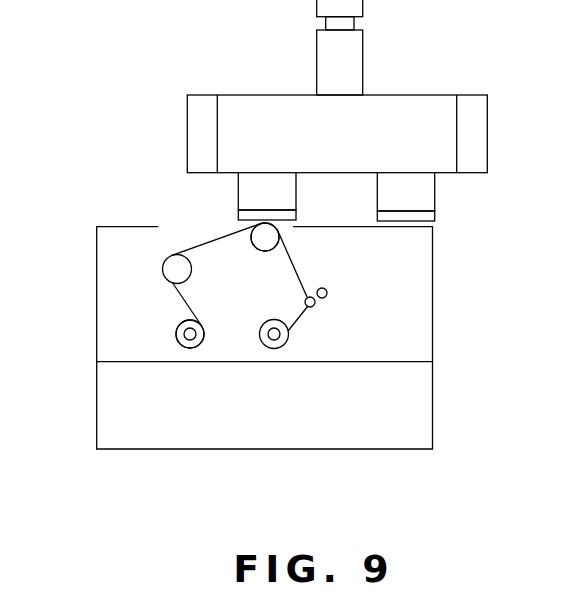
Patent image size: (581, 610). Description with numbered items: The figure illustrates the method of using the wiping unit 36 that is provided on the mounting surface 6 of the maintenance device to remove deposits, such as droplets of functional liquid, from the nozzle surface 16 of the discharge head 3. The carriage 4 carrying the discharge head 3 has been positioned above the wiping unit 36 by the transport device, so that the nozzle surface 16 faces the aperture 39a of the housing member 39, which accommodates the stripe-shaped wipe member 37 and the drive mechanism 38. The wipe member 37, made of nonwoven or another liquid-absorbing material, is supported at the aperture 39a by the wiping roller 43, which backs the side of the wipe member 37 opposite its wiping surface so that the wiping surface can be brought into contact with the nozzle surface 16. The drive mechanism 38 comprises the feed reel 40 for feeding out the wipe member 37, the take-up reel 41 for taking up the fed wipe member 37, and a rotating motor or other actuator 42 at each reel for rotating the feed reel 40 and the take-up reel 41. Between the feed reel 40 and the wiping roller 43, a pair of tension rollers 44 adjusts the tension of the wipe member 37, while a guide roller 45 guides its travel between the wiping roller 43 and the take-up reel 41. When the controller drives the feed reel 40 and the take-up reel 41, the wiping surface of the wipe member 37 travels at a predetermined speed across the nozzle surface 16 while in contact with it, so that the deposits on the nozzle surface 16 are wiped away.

The discharge head 3 is at (238, 185).
The carriage 4 is at (416, 98).
The mounting surface 6 is at (447, 266).
The nozzle surface 16 is at (292, 221).
The wiping unit 36 is at (86, 257).
The wipe member 37 is at (278, 233).
The drive mechanism 38 is at (163, 342).
The housing member 39 is at (428, 338).
The aperture 39a is at (196, 236).
The feed reel 40 is at (273, 348).
The take-up reel 41 is at (197, 349).
The actuator 42 is at (177, 330).
The wiping roller 43 is at (251, 252).
The tension rollers 44 is at (327, 297).
The guide roller 45 is at (163, 258).